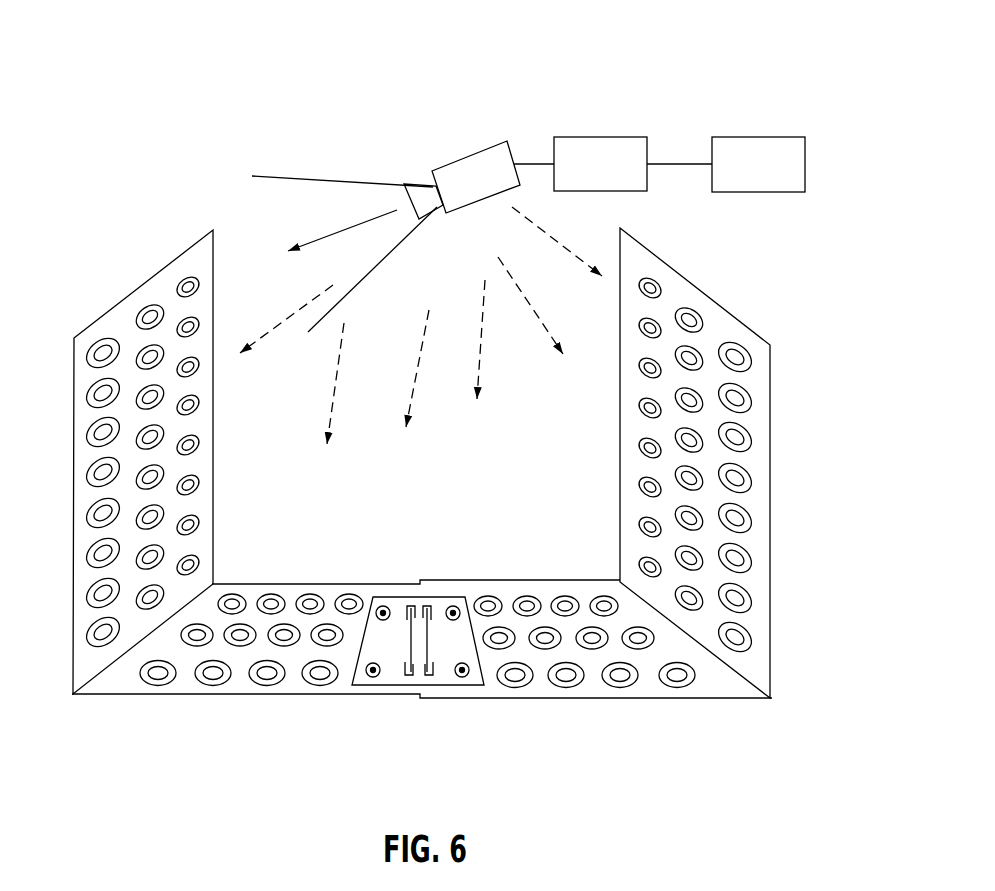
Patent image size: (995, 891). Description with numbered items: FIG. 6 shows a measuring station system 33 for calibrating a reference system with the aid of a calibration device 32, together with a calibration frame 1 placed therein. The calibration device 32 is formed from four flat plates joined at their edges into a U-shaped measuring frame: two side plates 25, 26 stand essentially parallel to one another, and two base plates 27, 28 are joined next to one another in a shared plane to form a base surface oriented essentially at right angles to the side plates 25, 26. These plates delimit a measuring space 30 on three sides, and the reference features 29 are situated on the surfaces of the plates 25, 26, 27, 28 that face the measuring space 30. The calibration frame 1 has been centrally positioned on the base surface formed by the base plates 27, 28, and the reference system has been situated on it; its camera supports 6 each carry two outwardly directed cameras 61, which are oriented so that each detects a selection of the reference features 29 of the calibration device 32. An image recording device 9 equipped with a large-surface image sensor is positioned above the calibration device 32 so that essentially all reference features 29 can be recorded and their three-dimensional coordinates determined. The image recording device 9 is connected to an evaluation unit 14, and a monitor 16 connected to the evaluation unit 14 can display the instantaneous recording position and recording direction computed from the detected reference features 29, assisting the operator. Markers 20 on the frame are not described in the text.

The calibration frame 1 is at (384, 690).
The camera supports 6 is at (413, 638).
The image recording device 9 is at (479, 175).
The evaluation unit 14 is at (603, 163).
The monitor 16 is at (762, 163).
The markers 20 is at (384, 606).
The side plate 25 is at (130, 334).
The side plate 26 is at (713, 338).
The base plate 27 is at (293, 673).
The base plate 28 is at (540, 673).
The reference features 29 is at (150, 314).
The measuring space 30 is at (545, 400).
The calibration device 32 is at (183, 718).
The measuring station system 33 is at (708, 68).
The cameras 61 is at (426, 606).